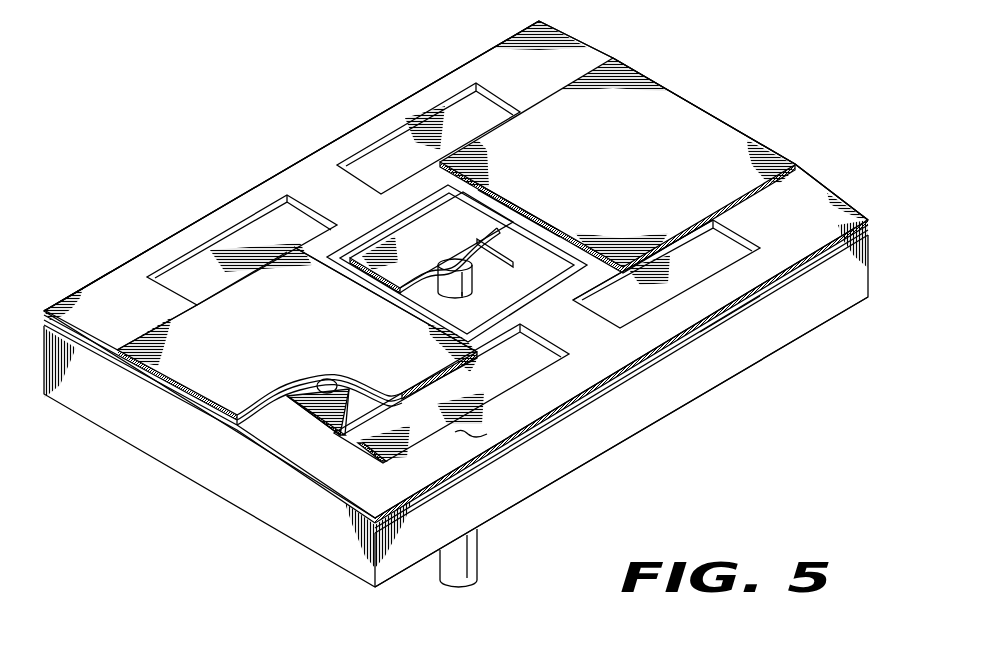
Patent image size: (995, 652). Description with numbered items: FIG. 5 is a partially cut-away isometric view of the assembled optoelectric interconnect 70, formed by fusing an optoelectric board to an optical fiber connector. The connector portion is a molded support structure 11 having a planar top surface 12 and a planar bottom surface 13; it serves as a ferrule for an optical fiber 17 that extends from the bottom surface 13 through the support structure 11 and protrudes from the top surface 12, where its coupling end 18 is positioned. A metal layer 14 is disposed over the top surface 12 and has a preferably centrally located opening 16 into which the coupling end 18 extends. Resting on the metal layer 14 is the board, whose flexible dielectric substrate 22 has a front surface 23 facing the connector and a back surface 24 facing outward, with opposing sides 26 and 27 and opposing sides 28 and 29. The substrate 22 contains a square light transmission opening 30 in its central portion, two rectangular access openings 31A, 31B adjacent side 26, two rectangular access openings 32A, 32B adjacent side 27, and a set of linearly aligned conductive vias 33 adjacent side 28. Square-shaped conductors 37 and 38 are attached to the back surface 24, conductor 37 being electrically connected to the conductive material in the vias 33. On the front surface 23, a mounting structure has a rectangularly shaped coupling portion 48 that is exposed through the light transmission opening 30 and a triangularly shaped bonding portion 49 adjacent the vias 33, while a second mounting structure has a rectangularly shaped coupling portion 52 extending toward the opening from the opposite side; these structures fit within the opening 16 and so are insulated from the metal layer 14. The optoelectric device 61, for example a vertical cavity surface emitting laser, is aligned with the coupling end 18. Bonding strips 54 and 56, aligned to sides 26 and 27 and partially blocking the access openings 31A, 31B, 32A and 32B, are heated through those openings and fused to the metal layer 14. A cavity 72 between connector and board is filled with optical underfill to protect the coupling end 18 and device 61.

The support structure 11 is at (186, 472).
The top surface 12 is at (585, 449).
The bottom surface 13 is at (693, 402).
The metal layer 14 is at (212, 430).
The opening 16 is at (318, 433).
The optical fiber 17 is at (478, 546).
The coupling end 18 is at (476, 271).
The substrate 22 is at (132, 321).
The front surface 23 is at (713, 317).
The back surface 24 is at (251, 191).
The side 26 is at (812, 256).
The side 27 is at (110, 274).
The side 28 is at (101, 353).
The side 29 is at (814, 183).
The light transmission opening 30 is at (571, 238).
The access opening 31A is at (566, 344).
The access opening 31B is at (757, 245).
The access opening 32A is at (328, 214).
The access opening 32B is at (523, 108).
The vias 33 is at (327, 378).
The conductor 37 is at (275, 351).
The conductor 38 is at (632, 173).
The rectangularly shaped coupling portion 48 is at (412, 306).
The triangularly shaped bonding portion 49 is at (337, 438).
The rectangularly shaped coupling portion 52 is at (541, 228).
The bonding strip 54 is at (367, 464).
The bonding strip 56 is at (193, 277).
The optoelectric device 61 is at (458, 257).
The optoelectric interconnect 70 is at (735, 543).
The cavity 72 is at (545, 288).